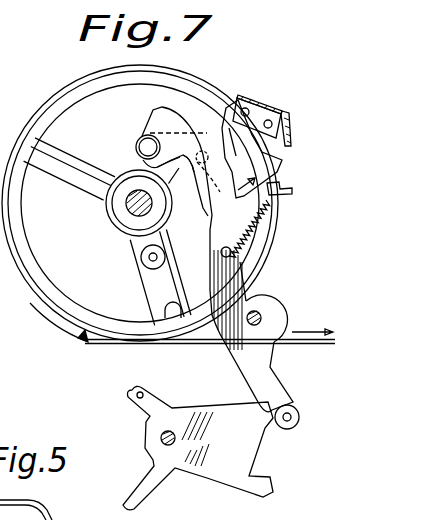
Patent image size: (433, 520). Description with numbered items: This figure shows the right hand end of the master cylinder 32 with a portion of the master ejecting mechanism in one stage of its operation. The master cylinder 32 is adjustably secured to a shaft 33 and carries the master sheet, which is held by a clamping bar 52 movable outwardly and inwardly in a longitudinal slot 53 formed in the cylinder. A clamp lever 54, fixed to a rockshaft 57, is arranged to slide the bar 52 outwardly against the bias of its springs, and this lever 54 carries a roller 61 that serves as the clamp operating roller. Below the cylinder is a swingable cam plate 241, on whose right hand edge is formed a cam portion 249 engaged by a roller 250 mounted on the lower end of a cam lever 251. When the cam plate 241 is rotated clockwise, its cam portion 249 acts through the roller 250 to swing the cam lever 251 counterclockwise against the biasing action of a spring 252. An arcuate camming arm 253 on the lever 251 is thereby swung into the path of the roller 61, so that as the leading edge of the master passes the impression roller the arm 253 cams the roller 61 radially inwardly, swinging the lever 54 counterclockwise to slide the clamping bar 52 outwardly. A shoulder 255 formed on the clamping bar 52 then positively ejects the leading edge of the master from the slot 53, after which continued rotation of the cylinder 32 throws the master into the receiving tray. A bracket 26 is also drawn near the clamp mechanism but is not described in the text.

The master cylinder 32 is at (268, 243).
The shaft 33 is at (131, 210).
The arcuate camming arm 253 is at (163, 101).
The roller 61 is at (139, 144).
The rockshaft 57 is at (169, 158).
The clamp lever 54 is at (194, 202).
The clamping bar 52 is at (272, 162).
The longitudinal slot 53 is at (266, 172).
The shoulder 255 is at (286, 184).
The bracket 26 is at (262, 97).
The cam lever 251 is at (266, 305).
The spring 252 is at (262, 218).
The roller 250 is at (296, 411).
The cam portion 249 is at (255, 465).
The swingable cam plate 241 is at (200, 478).